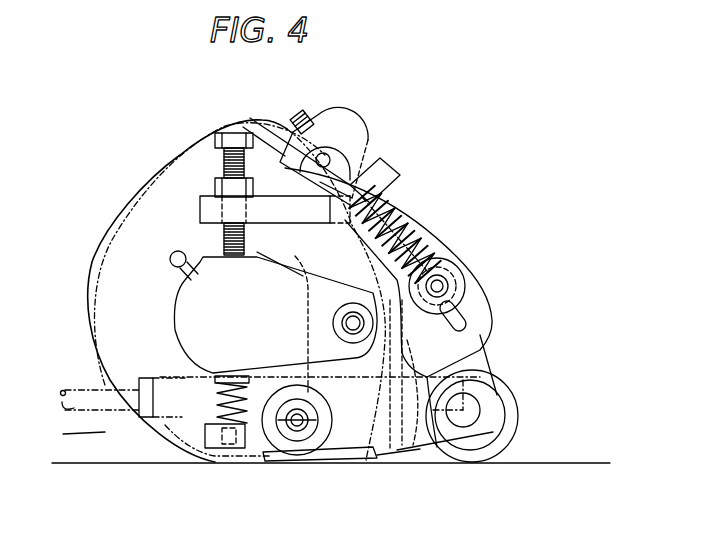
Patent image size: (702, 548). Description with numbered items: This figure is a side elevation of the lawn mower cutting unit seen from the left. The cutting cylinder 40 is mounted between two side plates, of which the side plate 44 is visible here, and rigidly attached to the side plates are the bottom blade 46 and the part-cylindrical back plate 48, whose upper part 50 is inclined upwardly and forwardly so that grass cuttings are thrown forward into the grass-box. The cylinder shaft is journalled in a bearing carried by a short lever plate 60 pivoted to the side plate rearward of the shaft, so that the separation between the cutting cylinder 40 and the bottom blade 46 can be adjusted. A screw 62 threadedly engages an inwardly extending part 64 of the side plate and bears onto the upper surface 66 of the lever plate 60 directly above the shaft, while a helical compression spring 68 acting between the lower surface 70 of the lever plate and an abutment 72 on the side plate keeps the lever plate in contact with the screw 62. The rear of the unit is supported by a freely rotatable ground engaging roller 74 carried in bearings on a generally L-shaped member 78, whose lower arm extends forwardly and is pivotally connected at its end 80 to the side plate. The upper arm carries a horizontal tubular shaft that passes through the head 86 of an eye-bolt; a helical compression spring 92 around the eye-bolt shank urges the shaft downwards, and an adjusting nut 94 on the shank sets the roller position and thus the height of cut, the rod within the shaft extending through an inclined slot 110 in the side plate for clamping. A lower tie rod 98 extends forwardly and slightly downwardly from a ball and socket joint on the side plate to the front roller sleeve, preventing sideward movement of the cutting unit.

The cutting cylinder 40 is at (96, 368).
The side plate 44 is at (194, 150).
The bottom blade 46 is at (340, 458).
The back plate 48 is at (397, 450).
The upper part of the back plate 50 is at (288, 140).
The short lever plate 60 is at (323, 290).
The screw 62 is at (215, 188).
The inwardly extending part 64 is at (203, 222).
The upper surface 66 is at (256, 254).
The helical compression spring 68 is at (217, 386).
The lower surface 70 is at (230, 376).
The abutment 72 is at (205, 436).
The roller 74 is at (505, 436).
The L-shaped member 78 is at (480, 370).
The end of the lower arm 80 is at (291, 445).
The head of the eye-bolt 86 is at (457, 266).
The helical compression spring 92 is at (403, 153).
The adjusting nut 94 is at (362, 141).
The lower tie rod 98 is at (70, 413).
The inclined slot 110 is at (458, 312).